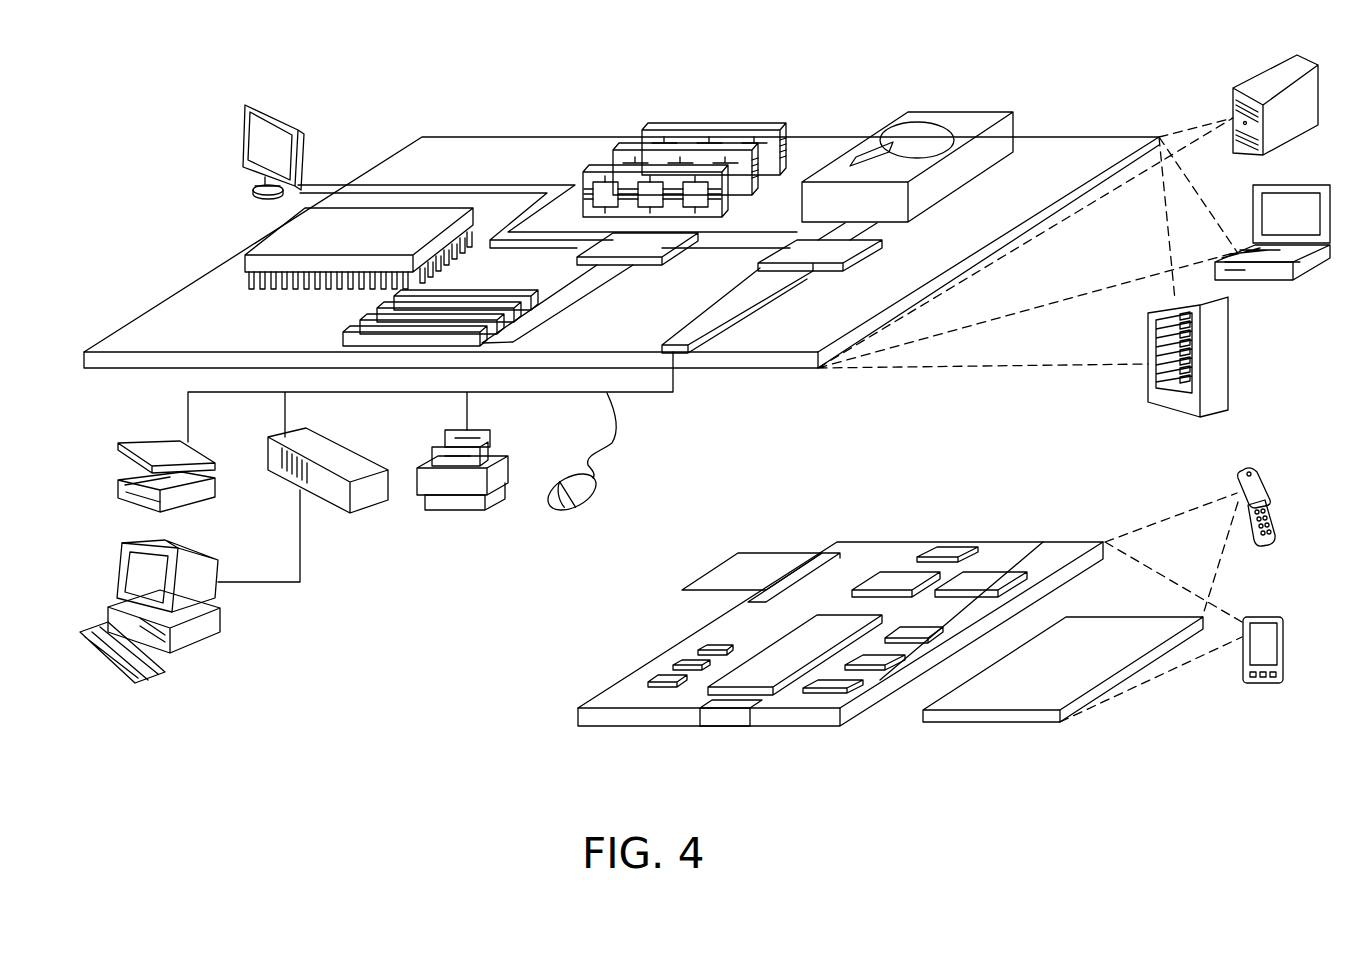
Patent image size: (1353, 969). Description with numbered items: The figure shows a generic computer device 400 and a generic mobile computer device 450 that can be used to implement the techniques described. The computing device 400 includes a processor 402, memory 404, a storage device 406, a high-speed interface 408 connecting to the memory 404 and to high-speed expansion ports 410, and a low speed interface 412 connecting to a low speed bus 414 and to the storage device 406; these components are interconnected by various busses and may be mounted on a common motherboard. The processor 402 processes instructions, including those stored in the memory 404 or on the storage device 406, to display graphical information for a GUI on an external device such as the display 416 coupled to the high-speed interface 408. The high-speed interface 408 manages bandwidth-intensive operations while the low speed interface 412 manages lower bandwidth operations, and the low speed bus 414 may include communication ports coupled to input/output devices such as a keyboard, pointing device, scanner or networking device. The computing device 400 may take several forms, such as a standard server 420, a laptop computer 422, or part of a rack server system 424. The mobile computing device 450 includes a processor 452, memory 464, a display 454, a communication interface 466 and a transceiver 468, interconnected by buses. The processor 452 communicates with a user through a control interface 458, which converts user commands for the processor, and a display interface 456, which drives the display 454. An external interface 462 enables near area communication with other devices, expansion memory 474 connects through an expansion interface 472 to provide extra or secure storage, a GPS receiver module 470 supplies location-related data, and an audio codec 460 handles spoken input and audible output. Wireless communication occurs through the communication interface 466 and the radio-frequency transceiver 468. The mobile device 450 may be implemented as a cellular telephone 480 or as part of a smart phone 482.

The generic computer device 400 is at (379, 83).
The processor 402 is at (272, 240).
The memory 404 is at (714, 128).
The storage device 406 is at (950, 113).
The high-speed interface 408 is at (650, 243).
The high-speed expansion ports 410 is at (372, 318).
The low speed interface 412 is at (793, 251).
The low speed bus 414 is at (682, 344).
The display 416 is at (248, 103).
The standard server 420 is at (1253, 83).
The laptop computer 422 is at (1308, 186).
The rack server system 424 is at (1232, 356).
The generic mobile computer device 450 is at (533, 737).
The processor 452 is at (763, 660).
The display 454 is at (1102, 630).
The display interface 456 is at (840, 683).
The control interface 458 is at (880, 658).
The audio codec 460 is at (920, 628).
The external interface 462 is at (724, 715).
The memory 464 is at (680, 665).
The communication interface 466 is at (897, 572).
The transceiver 468 is at (988, 572).
The GPS receiver module 470 is at (947, 554).
The expansion interface 472 is at (824, 553).
The expansion memory 474 is at (740, 552).
The cellular telephone 480 is at (1250, 467).
The smart phone 482 is at (1260, 615).